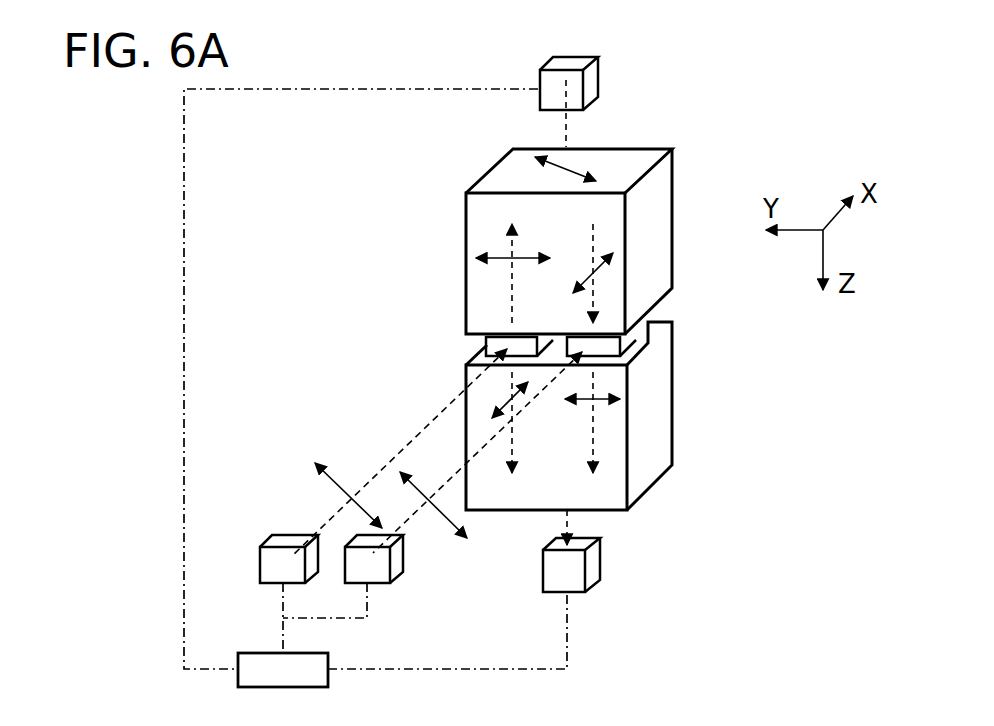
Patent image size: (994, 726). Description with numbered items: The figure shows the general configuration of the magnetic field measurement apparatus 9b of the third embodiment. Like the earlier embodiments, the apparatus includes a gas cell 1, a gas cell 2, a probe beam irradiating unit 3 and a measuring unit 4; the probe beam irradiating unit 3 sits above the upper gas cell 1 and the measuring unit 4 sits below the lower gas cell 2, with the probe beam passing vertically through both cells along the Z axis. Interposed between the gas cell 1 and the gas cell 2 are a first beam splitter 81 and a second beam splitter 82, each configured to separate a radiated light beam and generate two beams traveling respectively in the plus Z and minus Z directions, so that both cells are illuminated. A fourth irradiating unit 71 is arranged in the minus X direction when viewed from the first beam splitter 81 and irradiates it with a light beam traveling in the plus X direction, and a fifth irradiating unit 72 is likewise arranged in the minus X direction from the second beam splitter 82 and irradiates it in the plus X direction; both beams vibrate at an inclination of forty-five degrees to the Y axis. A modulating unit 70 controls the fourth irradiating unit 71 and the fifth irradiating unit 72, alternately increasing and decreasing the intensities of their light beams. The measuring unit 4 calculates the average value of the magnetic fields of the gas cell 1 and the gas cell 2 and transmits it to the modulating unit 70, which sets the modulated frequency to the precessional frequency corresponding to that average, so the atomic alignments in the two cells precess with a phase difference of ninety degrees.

The gas cell 1 is at (660, 228).
The gas cell 2 is at (665, 405).
The probe beam irradiating unit 3 is at (598, 82).
The measuring unit 4 is at (600, 565).
The modulating unit 70 is at (258, 653).
The fourth irradiating unit 71 is at (283, 535).
The fifth irradiating unit 72 is at (395, 583).
The first beam splitter 81 is at (486, 341).
The second beam splitter 82 is at (642, 336).
The magnetic field measurement apparatus 9b is at (758, 507).